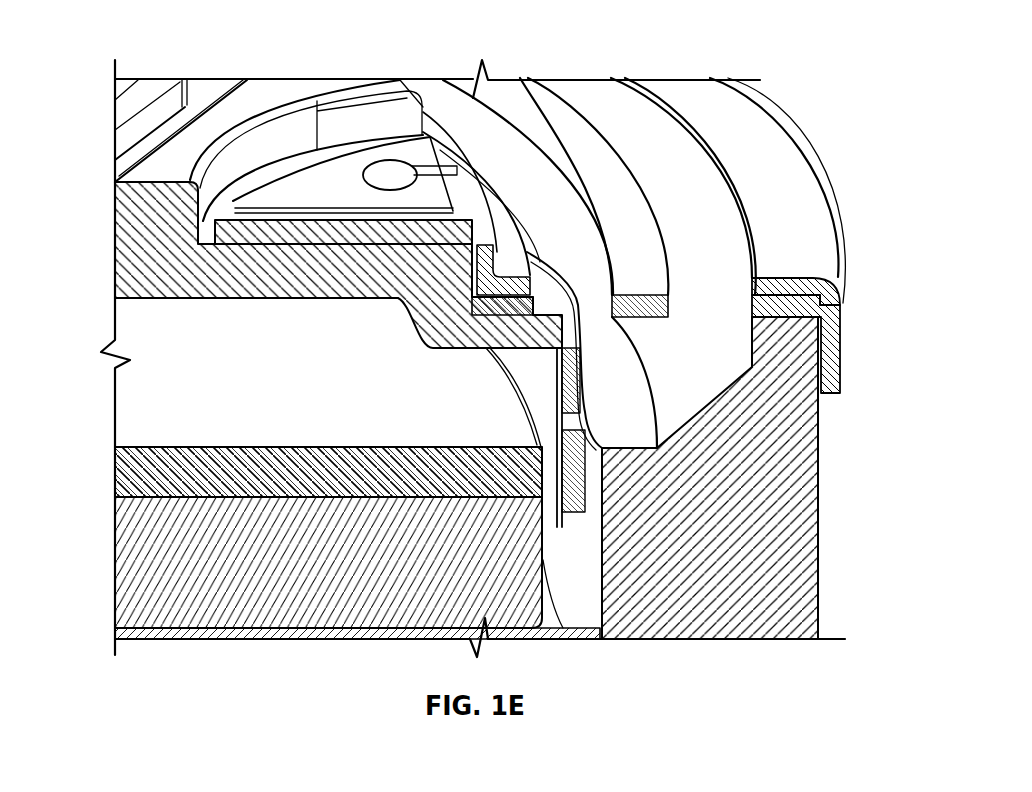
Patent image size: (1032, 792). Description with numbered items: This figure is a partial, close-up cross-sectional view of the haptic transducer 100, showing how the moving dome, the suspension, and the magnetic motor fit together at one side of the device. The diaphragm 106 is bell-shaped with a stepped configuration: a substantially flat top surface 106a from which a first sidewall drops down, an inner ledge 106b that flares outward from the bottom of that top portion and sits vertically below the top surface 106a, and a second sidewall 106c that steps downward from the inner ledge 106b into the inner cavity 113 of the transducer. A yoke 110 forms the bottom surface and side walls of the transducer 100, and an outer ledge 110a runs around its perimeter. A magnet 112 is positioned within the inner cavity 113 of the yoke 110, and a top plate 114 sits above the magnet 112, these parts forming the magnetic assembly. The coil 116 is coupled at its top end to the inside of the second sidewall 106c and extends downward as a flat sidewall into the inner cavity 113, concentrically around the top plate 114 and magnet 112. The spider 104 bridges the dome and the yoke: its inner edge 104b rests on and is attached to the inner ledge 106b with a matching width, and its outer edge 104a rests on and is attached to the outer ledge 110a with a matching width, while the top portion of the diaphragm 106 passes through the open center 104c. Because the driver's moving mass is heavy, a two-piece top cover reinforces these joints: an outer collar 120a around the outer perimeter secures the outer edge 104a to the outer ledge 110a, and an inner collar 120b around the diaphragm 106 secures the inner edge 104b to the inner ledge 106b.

The haptic transducer 100 is at (206, 43).
The spider 104 is at (580, 148).
The outer edge of the spider 104a is at (802, 305).
The inner edge of the spider 104b is at (515, 305).
The open center 104c is at (380, 309).
The diaphragm 106 is at (150, 221).
The top surface 106a is at (185, 152).
The inner ledge 106b is at (567, 402).
The second sidewall 106c is at (583, 445).
The yoke 110 is at (793, 583).
The outer ledge of the yoke 110a is at (796, 321).
The magnet 112 is at (163, 553).
The inner cavity 113 is at (565, 583).
The top plate 114 is at (172, 423).
The coil 116 is at (550, 455).
The outer collar 120a is at (783, 242).
The inner collar 120b is at (510, 252).